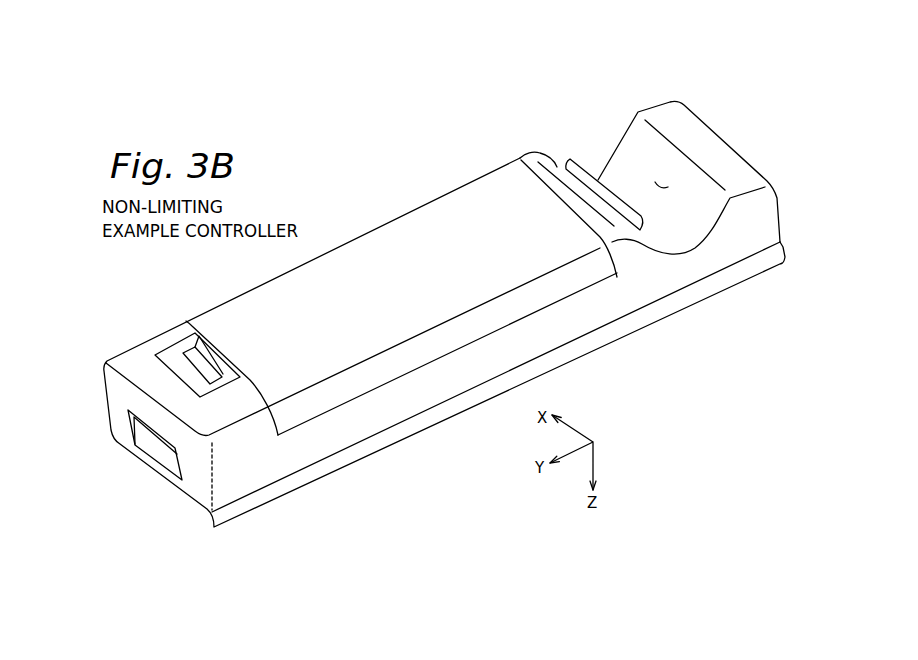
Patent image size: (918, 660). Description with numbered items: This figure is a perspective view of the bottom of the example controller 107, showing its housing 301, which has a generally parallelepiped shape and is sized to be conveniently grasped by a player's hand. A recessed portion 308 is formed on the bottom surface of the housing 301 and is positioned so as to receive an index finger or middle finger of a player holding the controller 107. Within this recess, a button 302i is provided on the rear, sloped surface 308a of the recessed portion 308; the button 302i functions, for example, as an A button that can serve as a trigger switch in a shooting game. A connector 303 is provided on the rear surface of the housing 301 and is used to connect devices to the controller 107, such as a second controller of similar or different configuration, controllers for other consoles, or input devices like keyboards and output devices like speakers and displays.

The controller 107 is at (457, 152).
The housing 301 is at (242, 467).
The connector 303 is at (155, 443).
The recessed portion 308 is at (620, 117).
The rear sloped surface 308a is at (555, 160).
The button 302i is at (605, 183).